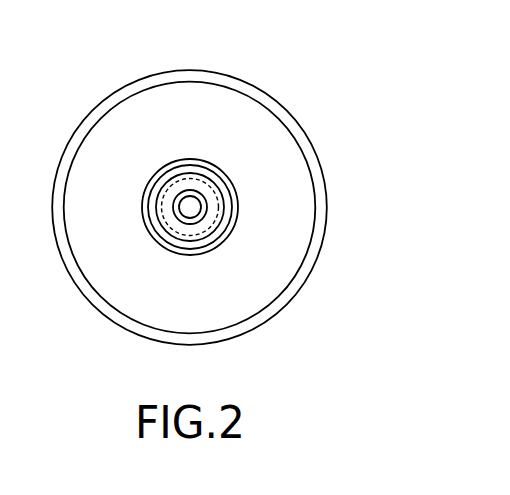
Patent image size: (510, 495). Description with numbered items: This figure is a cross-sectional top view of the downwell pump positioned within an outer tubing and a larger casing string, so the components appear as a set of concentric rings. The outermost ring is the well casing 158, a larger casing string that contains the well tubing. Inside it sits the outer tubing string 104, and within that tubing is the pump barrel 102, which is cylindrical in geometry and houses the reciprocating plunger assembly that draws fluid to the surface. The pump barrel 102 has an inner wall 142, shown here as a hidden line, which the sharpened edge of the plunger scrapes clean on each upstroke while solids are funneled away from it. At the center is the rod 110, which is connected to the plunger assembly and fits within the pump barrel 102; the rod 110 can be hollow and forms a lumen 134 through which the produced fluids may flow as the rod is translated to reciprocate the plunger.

The pump barrel 102 is at (192, 177).
The outer tubing string 104 is at (168, 165).
The rod 110 is at (196, 203).
The lumen 134 is at (196, 204).
The inner wall 142 is at (217, 226).
The well casing 158 is at (143, 77).